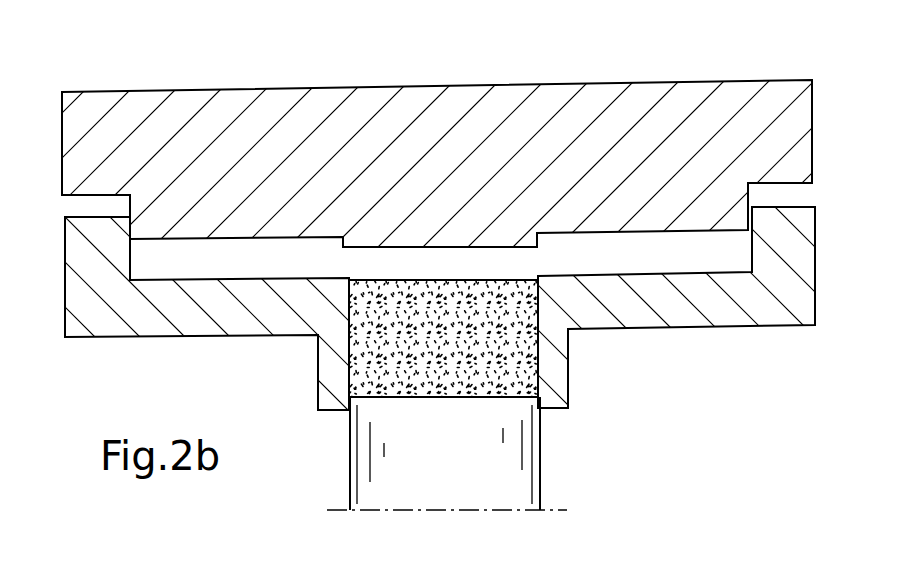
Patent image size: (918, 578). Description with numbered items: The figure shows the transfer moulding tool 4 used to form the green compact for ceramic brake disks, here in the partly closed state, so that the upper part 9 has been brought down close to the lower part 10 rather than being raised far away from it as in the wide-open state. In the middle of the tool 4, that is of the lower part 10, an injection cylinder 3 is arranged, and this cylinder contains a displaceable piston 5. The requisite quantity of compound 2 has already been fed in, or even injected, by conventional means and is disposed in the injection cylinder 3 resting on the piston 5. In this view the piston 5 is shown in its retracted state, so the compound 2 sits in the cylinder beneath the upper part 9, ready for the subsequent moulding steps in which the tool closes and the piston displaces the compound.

The compound 2 is at (517, 372).
The injection cylinder 3 is at (332, 368).
The tool 4 is at (46, 224).
The piston 5 is at (507, 443).
The upper part 9 is at (786, 117).
The lower part 10 is at (787, 273).